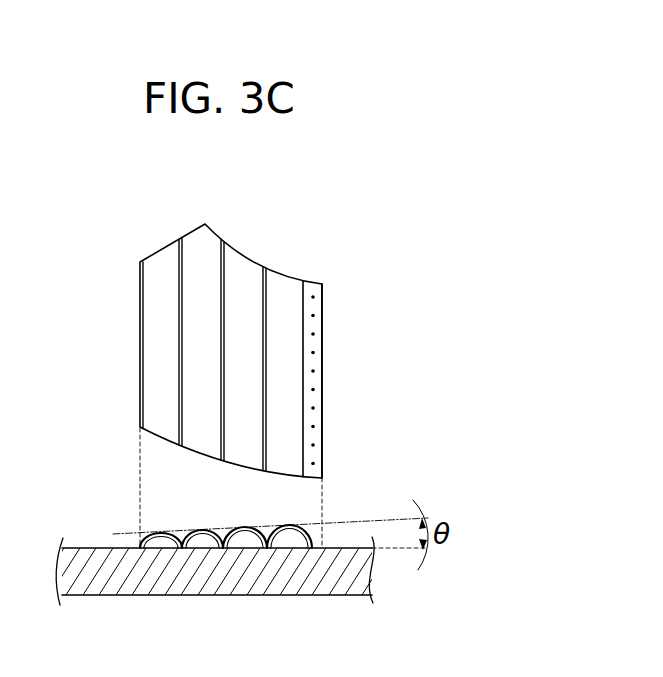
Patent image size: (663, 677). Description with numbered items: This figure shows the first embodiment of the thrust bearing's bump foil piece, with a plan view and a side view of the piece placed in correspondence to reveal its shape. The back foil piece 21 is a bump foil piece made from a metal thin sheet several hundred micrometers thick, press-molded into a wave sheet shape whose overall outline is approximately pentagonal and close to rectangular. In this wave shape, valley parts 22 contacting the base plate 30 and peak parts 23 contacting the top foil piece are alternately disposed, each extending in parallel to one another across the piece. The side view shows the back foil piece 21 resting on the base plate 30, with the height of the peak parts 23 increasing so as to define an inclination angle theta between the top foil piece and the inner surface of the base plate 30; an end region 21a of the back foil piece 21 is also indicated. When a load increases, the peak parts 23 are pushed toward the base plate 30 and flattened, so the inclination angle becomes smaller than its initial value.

The back foil piece 21 is at (247, 247).
The end portion of heat exchange member 21a is at (315, 370).
The valley parts 22 is at (223, 241).
The peak parts 23 is at (205, 268).
The base plate 30 is at (274, 568).